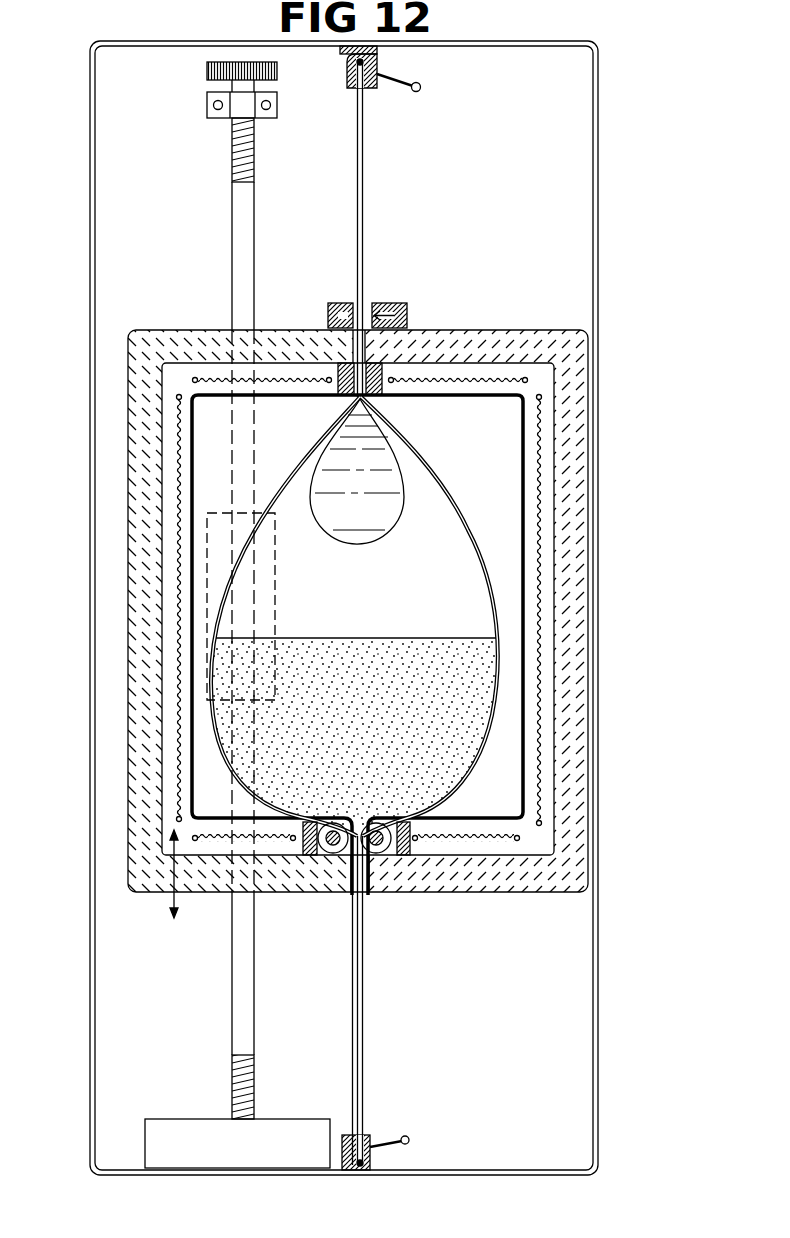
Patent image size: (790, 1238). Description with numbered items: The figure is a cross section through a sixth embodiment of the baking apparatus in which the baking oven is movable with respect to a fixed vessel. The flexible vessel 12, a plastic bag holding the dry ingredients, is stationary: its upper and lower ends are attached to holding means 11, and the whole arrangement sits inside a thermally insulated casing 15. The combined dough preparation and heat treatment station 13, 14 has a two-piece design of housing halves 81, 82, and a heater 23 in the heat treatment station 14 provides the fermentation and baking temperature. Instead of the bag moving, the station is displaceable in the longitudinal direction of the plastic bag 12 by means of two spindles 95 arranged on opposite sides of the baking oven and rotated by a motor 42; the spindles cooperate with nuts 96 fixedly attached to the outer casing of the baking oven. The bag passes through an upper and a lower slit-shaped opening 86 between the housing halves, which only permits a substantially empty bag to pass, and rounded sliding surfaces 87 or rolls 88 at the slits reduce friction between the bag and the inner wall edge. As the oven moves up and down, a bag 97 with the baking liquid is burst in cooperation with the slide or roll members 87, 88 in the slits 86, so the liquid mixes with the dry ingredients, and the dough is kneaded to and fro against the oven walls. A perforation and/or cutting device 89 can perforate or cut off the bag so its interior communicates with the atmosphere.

The holding means 11 is at (380, 71).
The flexible vessel 12 is at (362, 185).
The dough preparation station 13 is at (446, 630).
The heat treatment station 14 is at (502, 433).
The thermally insulated casing 15 is at (570, 685).
The heater 23 is at (540, 560).
The motor 42 is at (190, 1133).
The first housing half 81 is at (349, 611).
The second housing half 82 is at (573, 475).
The slit-shaped opening 86 is at (356, 815).
The rounded sliding surfaces 87 is at (338, 393).
The rolls 88 is at (333, 846).
The perforation and/or cutting device 89 is at (397, 303).
The spindles 95 is at (236, 1002).
The nuts 96 is at (275, 614).
The bag with baking liquid 97 is at (370, 486).